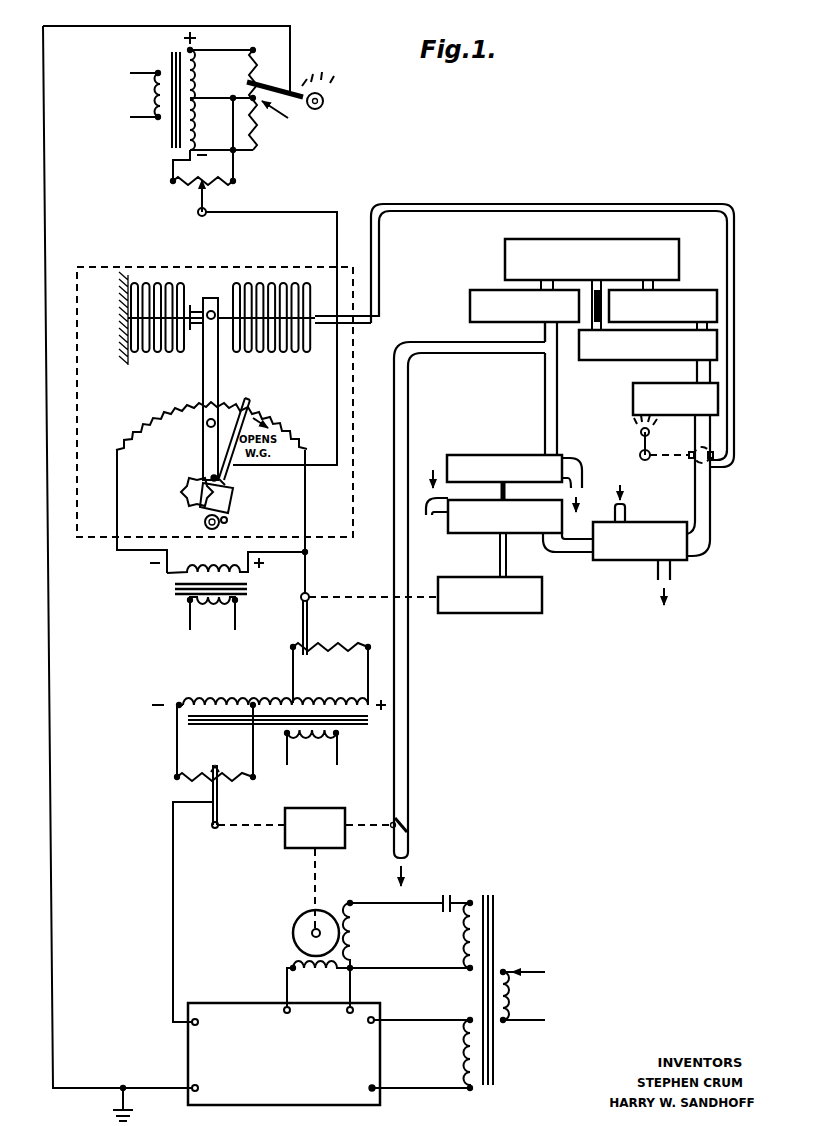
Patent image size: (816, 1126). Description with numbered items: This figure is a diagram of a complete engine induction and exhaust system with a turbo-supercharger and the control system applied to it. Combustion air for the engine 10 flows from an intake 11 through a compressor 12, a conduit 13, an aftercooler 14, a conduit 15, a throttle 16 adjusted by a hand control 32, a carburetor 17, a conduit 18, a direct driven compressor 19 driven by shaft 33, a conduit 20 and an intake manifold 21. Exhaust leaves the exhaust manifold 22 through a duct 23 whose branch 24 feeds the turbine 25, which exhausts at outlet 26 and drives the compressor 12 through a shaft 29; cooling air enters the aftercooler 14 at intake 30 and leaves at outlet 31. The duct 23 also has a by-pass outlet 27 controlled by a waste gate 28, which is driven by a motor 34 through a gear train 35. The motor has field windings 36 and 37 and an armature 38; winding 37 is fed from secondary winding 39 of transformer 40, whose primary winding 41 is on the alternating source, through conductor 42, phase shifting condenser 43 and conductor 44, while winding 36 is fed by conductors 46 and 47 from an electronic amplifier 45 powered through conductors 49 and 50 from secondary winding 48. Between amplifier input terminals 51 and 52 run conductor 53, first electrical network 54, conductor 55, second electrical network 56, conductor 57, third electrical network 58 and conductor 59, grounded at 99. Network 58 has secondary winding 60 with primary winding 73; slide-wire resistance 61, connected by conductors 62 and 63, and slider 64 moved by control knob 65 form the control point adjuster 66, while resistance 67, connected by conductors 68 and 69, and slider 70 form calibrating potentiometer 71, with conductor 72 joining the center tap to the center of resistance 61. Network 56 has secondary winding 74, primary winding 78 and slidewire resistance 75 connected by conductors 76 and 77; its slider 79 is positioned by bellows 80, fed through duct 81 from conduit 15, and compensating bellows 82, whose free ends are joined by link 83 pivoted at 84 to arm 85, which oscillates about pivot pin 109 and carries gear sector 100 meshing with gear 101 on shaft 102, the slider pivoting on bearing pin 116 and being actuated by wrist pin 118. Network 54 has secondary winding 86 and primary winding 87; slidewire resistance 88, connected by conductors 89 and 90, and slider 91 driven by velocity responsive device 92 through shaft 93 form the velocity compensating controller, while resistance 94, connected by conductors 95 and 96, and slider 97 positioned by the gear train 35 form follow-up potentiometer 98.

The engine 10 is at (540, 248).
The intake 11 is at (436, 517).
The compressor 12 is at (476, 532).
The conduit 13 is at (580, 553).
The aftercooler 14 is at (620, 561).
The conduit 15 is at (695, 500).
The throttle 16 is at (695, 461).
The carburetor 17 is at (669, 415).
The conduit 18 is at (696, 371).
The direct driven compressor 19 is at (587, 356).
The conduit 20 is at (712, 326).
The intake manifold 21 is at (704, 295).
The exhaust manifold 22 is at (469, 303).
The duct 23 is at (544, 331).
The branch 24 is at (544, 402).
The turbine 25 is at (468, 455).
The outlet 26 is at (576, 459).
The by-pass outlet 27 is at (408, 843).
The waste gate 28 is at (410, 818).
The shaft 29 is at (510, 490).
The intake 30 is at (628, 510).
The outlet 31 is at (672, 572).
The hand control 32 is at (640, 447).
The shaft 33 is at (591, 326).
The motor 34 is at (291, 919).
The gear train 35 is at (298, 810).
The field winding 36 is at (313, 970).
The field winding 37 is at (357, 934).
The armature 38 is at (293, 940).
The secondary winding 39 is at (466, 940).
The transformer 40 is at (507, 947).
The primary winding 41 is at (514, 995).
The conductor 42 is at (480, 896).
The phase shifting condenser 43 is at (450, 894).
The conductor 44 is at (414, 968).
The electronic amplifier 45 is at (230, 1010).
The conductor 46 is at (285, 983).
The conductor 47 is at (353, 985).
The secondary winding 48 is at (465, 1055).
The conductor 49 is at (425, 1019).
The conductor 50 is at (430, 1089).
The amplifier input terminal 51 is at (198, 1022).
The amplifier input terminal 52 is at (198, 1088).
The conductor 53 is at (172, 918).
The first electrical network 54 is at (153, 740).
The conductor 55 is at (307, 560).
The second electrical network 56 is at (158, 574).
The conductor 57 is at (320, 211).
The third electrical network 58 is at (285, 118).
The conductor 59 is at (46, 218).
The transformer secondary winding 60 is at (197, 63).
The slide-wire resistance 61 is at (260, 128).
The conductor 62 is at (200, 47).
The conductor 63 is at (262, 153).
The slider 64 is at (262, 85).
The control knob 65 is at (325, 102).
The control point adjuster 66 is at (333, 70).
The slidewire resistance 67 is at (188, 186).
The conductor 68 is at (172, 168).
The conductor 69 is at (238, 180).
The slider 70 is at (208, 199).
The calibrating potentiometer 71 is at (196, 216).
The conductor 72 is at (222, 100).
The primary winding 73 is at (152, 84).
The secondary winding 74 is at (210, 568).
The slidewire resistance 75 is at (152, 424).
The conductor 76 is at (118, 485).
The conductor 77 is at (306, 507).
The primary winding 78 is at (213, 618).
The slider 79 is at (226, 447).
The bellows 80 is at (287, 348).
The duct 81 is at (477, 205).
The compensating bellows 82 is at (151, 348).
The link 83 is at (197, 306).
The pivot 84 is at (214, 311).
The arm 85 is at (220, 368).
The transformer secondary winding 86 is at (275, 702).
The primary winding 87 is at (312, 751).
The slidewire resistance 88 is at (346, 642).
The conductor 89 is at (366, 676).
The conductor 90 is at (291, 660).
The slider 91 is at (301, 622).
The velocity responsive device 92 is at (522, 613).
The shaft 93 is at (509, 555).
The slidewire resistance 94 is at (202, 770).
The conductor 95 is at (176, 762).
The conductor 96 is at (254, 742).
The slider 97 is at (221, 793).
The follow-up potentiometer 98 is at (192, 786).
The ground 99 is at (119, 1112).
The gear sector 100 is at (182, 498).
The gear 101 is at (204, 520).
The shaft 102 is at (230, 519).
The pivot pin 109 is at (207, 423).
The bearing pin 116 is at (235, 497).
The wrist pin 118 is at (232, 484).